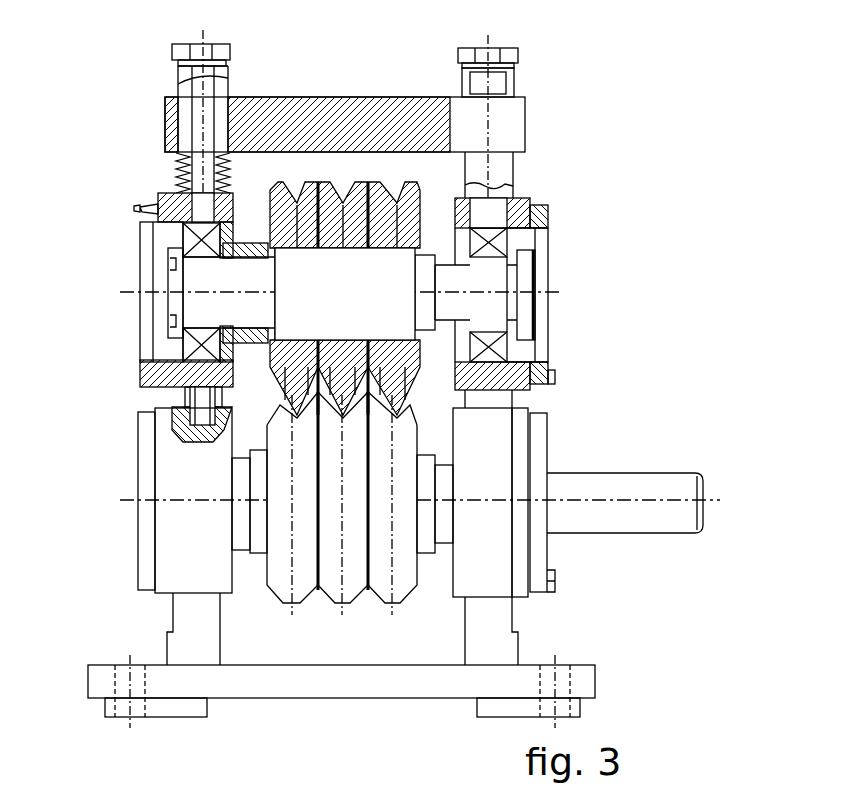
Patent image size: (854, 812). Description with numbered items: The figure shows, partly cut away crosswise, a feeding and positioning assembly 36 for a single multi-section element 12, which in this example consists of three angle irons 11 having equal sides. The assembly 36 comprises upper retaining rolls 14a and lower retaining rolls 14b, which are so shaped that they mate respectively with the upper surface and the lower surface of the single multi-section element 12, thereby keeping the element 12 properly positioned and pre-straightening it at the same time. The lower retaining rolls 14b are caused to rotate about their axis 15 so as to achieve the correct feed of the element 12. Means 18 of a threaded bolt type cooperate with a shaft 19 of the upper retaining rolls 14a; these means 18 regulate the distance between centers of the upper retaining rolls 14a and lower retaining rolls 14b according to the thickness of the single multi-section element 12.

The angle iron 11 is at (272, 400).
The single multi-section element 12 is at (270, 420).
The upper retaining rolls 14a is at (270, 182).
The lower retaining rolls 14b is at (274, 560).
The axis 15 is at (188, 500).
The means to regulate the distance between centers 18 is at (170, 72).
The shaft 19 is at (212, 277).
The feeding and positioning assembly 36 is at (648, 120).